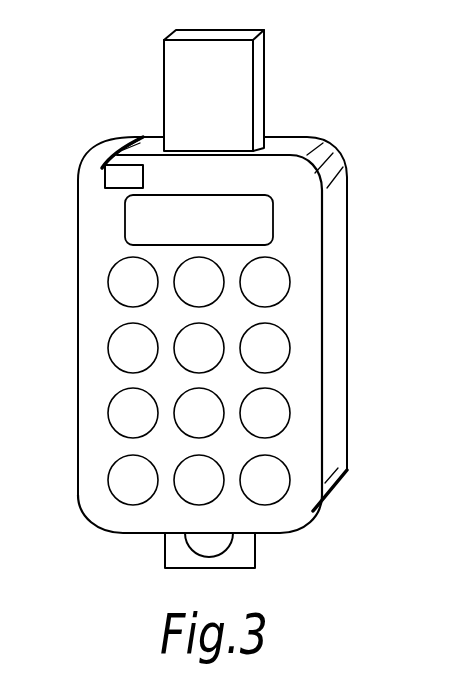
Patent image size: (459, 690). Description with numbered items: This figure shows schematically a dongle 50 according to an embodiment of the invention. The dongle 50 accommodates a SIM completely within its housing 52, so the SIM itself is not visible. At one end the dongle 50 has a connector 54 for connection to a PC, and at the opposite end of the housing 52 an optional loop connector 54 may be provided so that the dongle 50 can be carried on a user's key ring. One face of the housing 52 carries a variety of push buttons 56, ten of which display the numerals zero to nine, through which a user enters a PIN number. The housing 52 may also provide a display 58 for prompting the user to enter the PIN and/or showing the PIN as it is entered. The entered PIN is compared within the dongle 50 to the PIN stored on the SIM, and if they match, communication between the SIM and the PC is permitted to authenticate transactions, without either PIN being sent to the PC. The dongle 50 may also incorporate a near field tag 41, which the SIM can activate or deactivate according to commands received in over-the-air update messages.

The near field tag 41 is at (105, 172).
The dongle 50 is at (310, 345).
The housing 52 is at (216, 381).
The connector 54 is at (255, 72).
The push buttons 56 is at (108, 413).
The display 58 is at (279, 215).